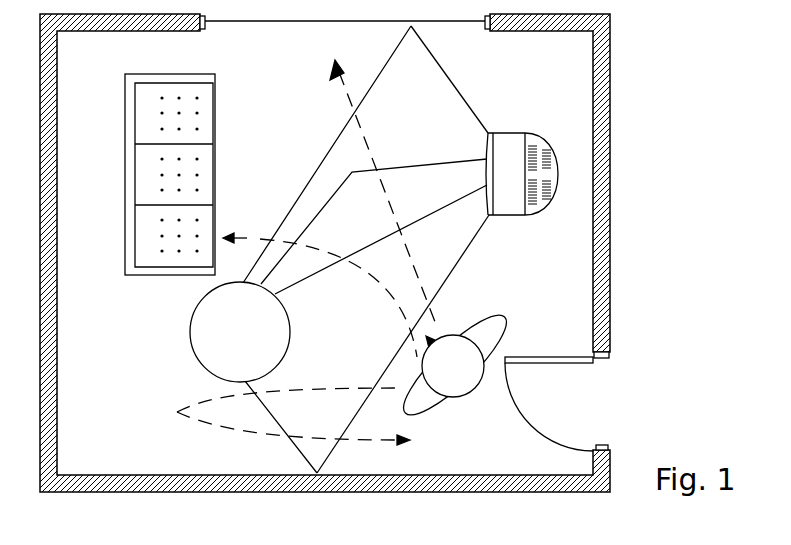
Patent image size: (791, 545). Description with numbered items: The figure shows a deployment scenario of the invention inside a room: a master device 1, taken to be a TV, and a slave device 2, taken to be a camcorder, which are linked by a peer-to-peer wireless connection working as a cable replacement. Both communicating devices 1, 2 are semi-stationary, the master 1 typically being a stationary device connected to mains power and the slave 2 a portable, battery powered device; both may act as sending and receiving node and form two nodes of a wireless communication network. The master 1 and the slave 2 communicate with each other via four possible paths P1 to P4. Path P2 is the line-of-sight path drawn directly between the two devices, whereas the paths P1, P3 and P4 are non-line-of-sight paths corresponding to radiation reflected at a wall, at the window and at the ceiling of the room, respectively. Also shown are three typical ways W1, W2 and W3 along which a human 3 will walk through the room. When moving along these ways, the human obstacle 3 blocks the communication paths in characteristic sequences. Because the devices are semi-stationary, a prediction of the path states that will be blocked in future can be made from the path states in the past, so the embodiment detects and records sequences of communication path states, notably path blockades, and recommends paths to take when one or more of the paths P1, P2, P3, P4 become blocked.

The master device 1 is at (506, 133).
The slave device 2 is at (190, 327).
The human 3 is at (461, 398).
The path P1 is at (475, 243).
The path P2 is at (304, 279).
The path P3 is at (446, 70).
The path P4 is at (416, 165).
The way W1 is at (176, 412).
The way W2 is at (342, 80).
The way W3 is at (245, 236).